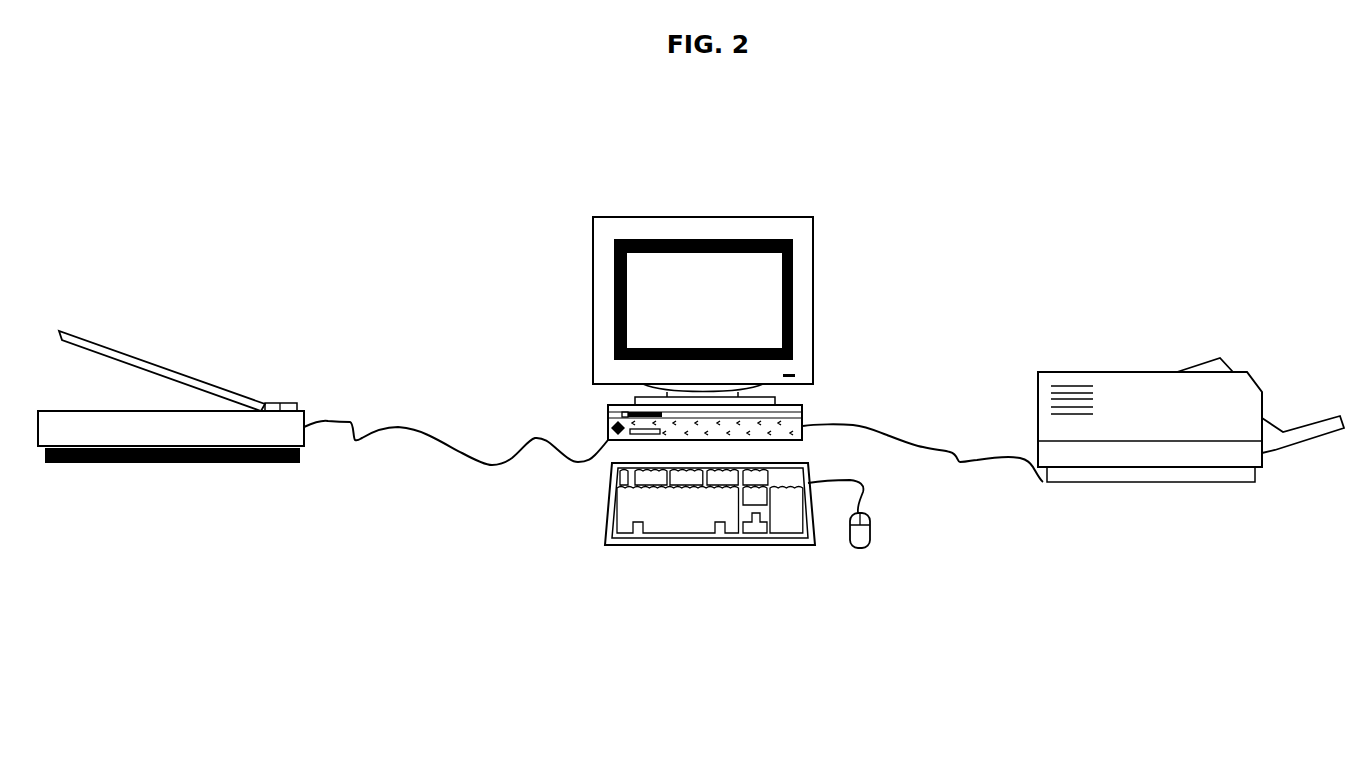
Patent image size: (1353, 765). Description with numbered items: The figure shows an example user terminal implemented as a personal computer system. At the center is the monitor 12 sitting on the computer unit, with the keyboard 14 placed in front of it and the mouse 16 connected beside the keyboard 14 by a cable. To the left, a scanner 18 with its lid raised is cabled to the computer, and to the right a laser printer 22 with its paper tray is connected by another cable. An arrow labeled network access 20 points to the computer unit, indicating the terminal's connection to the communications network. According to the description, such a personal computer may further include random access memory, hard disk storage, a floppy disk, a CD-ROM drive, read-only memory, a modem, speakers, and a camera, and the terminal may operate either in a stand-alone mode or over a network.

The monitor 12 is at (703, 328).
The keyboard 14 is at (710, 532).
The mouse 16 is at (848, 542).
The scanner 18 is at (171, 423).
The network access 20 is at (820, 427).
The laser printer 22 is at (1191, 448).